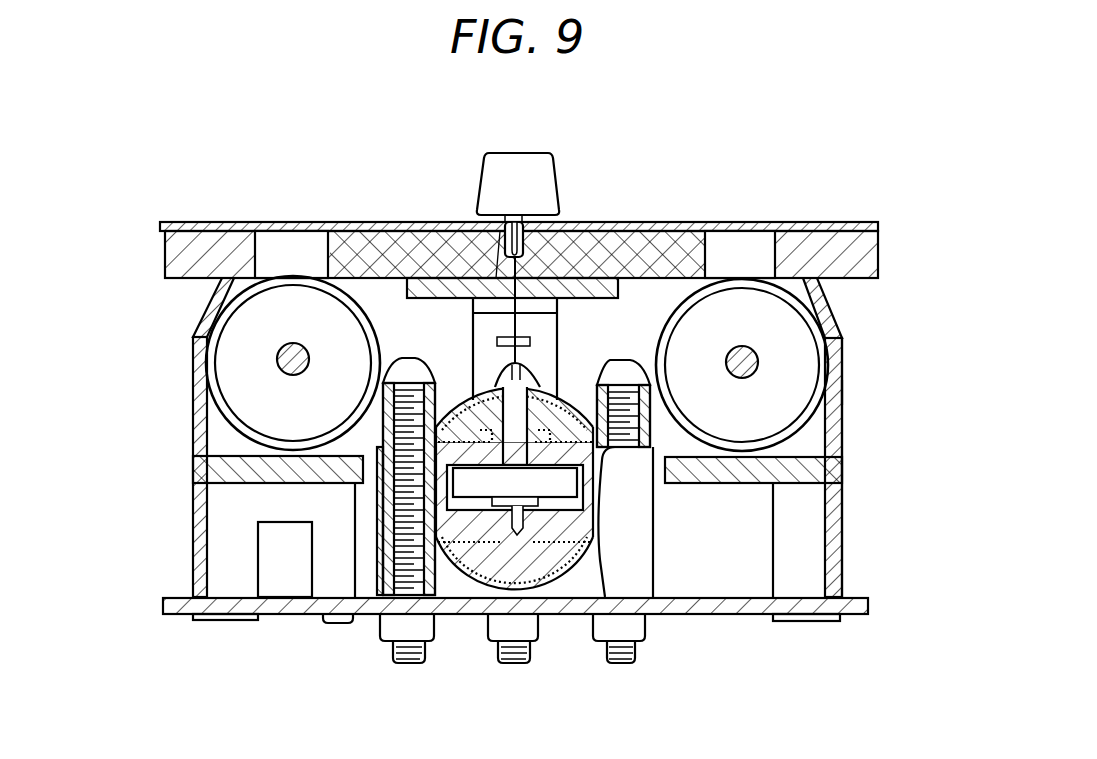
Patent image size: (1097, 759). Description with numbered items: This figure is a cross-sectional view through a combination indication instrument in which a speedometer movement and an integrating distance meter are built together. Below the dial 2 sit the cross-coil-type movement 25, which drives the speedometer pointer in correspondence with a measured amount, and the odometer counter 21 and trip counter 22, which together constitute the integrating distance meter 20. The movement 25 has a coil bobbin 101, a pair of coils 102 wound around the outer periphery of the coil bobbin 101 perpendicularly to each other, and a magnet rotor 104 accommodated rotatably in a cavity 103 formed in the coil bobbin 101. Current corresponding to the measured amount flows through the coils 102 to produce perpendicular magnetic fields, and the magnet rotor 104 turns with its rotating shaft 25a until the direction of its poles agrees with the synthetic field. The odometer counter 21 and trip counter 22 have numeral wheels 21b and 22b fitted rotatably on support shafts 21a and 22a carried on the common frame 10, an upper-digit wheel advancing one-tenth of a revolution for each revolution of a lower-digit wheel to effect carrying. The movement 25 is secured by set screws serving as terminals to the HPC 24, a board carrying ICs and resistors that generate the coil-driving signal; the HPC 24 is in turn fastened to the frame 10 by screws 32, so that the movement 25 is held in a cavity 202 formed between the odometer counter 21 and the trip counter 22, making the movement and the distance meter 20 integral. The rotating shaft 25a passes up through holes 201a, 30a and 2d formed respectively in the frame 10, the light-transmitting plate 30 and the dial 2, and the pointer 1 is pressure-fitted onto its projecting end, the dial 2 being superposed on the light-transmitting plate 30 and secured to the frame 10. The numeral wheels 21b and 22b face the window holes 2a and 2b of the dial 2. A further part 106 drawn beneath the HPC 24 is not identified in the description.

The pointer 1 is at (512, 162).
The dial 2 is at (521, 196).
The window hole 2a is at (773, 223).
The window hole 2b is at (265, 222).
The hole 2d is at (493, 297).
The common frame 10 is at (843, 350).
The integrating distance meter 20 is at (847, 395).
The odometer counter 21 is at (806, 449).
The support shaft 21a is at (752, 367).
The numeral wheels 21b is at (793, 327).
The trip counter 22 is at (234, 448).
The support shaft 22a is at (277, 365).
The numeral wheels 22b is at (233, 340).
The HPC 24 is at (748, 617).
The cross-coil-type movement 25 is at (670, 533).
The rotating shaft 25a is at (503, 387).
The light-transmitting plate 30 is at (862, 247).
The hole 30a is at (502, 277).
The screws 32 is at (333, 624).
The coil bobbin 101 is at (588, 528).
The coils 102 is at (450, 387).
The cavity 103 is at (585, 567).
The magnet rotor 104 is at (567, 487).
The fastening nut 106 is at (620, 660).
The hole 201a is at (482, 262).
The cavity 202 is at (621, 357).